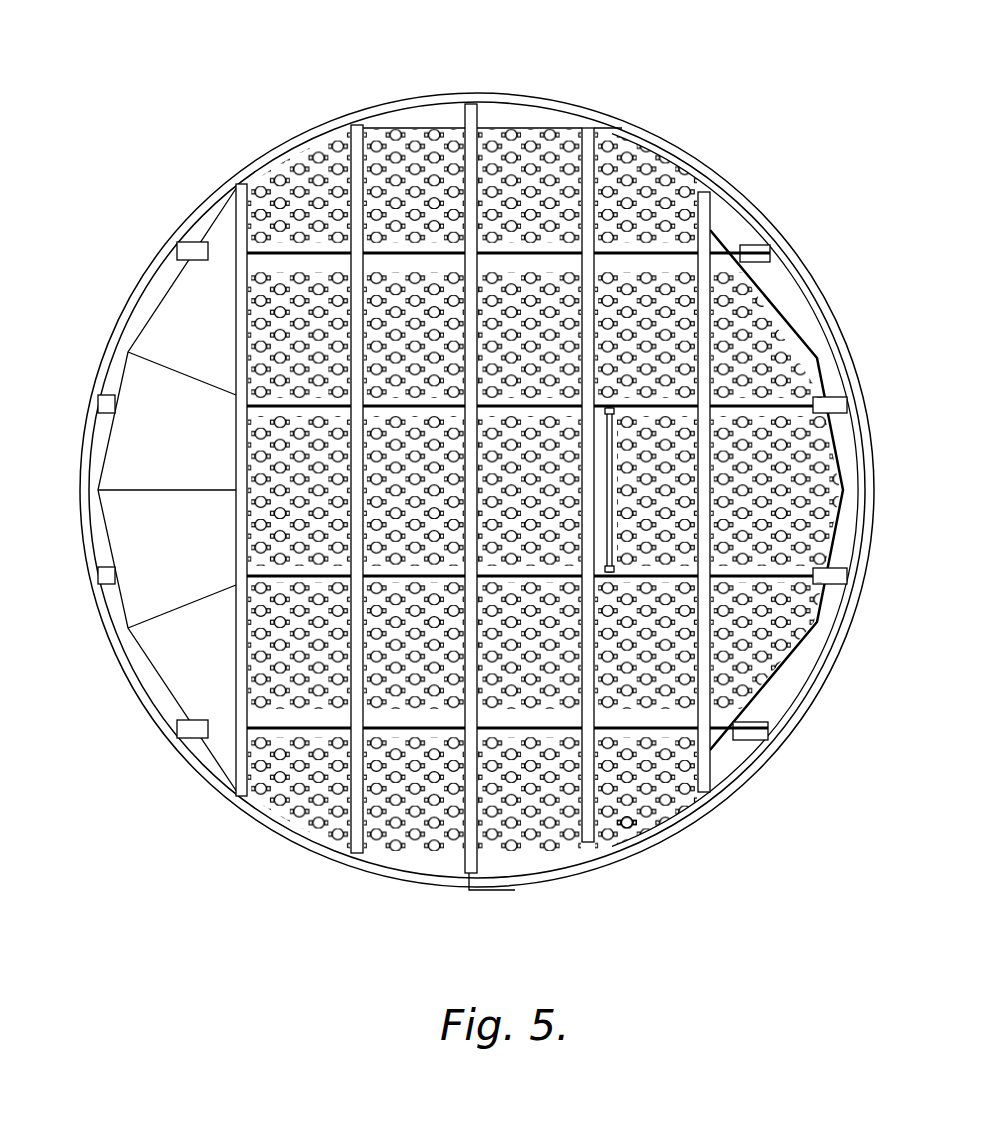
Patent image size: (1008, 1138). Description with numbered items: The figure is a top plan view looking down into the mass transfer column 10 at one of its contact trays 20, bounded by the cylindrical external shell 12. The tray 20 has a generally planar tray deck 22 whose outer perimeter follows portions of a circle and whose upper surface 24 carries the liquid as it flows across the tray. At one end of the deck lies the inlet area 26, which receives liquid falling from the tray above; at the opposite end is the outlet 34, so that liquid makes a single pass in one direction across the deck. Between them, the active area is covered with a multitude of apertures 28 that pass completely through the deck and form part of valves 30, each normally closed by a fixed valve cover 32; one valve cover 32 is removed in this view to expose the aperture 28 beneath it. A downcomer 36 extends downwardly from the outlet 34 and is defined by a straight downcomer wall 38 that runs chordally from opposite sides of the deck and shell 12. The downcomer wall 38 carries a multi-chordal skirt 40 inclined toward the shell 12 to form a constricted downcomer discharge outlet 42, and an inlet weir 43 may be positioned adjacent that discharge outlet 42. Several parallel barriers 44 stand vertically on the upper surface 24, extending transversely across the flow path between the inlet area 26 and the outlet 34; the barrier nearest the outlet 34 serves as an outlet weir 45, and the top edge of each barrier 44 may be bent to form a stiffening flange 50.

The mass transfer column 10 is at (508, 86).
The external shell 12 is at (535, 95).
The contact tray 20 is at (606, 150).
The tray deck 22 is at (690, 190).
The upper surface 24 is at (665, 165).
The inlet area 26 is at (792, 300).
The aperture 28 is at (541, 856).
The valve 30 is at (657, 812).
The valve cover 32 is at (623, 826).
The outlet 34 is at (232, 218).
The downcomer 36 is at (176, 314).
The downcomer wall 38 is at (228, 648).
The multi-chordal skirt 40 is at (130, 572).
The downcomer discharge outlet 42 is at (108, 432).
The inlet weir 43 is at (813, 338).
The barrier 44 is at (356, 132).
The outlet weir 45 is at (248, 190).
The stiffening flange 50 is at (466, 862).